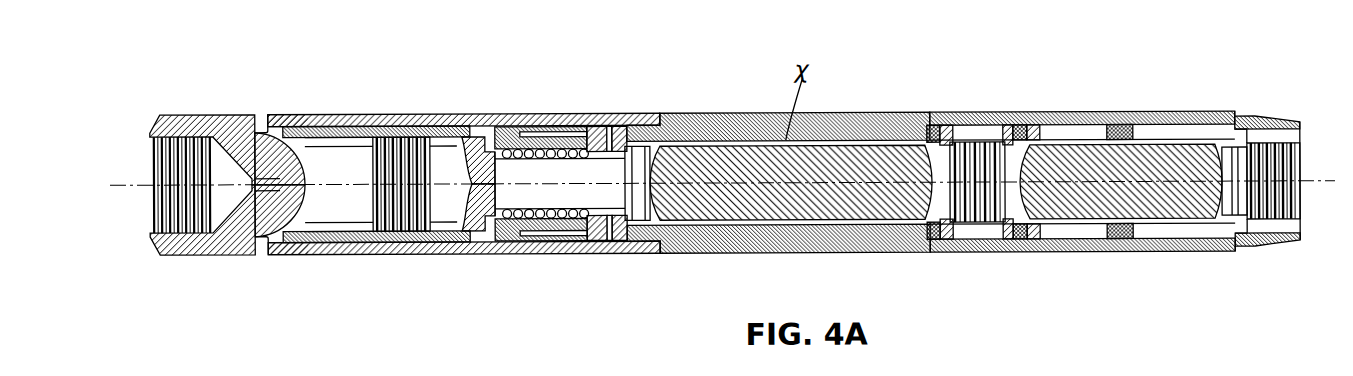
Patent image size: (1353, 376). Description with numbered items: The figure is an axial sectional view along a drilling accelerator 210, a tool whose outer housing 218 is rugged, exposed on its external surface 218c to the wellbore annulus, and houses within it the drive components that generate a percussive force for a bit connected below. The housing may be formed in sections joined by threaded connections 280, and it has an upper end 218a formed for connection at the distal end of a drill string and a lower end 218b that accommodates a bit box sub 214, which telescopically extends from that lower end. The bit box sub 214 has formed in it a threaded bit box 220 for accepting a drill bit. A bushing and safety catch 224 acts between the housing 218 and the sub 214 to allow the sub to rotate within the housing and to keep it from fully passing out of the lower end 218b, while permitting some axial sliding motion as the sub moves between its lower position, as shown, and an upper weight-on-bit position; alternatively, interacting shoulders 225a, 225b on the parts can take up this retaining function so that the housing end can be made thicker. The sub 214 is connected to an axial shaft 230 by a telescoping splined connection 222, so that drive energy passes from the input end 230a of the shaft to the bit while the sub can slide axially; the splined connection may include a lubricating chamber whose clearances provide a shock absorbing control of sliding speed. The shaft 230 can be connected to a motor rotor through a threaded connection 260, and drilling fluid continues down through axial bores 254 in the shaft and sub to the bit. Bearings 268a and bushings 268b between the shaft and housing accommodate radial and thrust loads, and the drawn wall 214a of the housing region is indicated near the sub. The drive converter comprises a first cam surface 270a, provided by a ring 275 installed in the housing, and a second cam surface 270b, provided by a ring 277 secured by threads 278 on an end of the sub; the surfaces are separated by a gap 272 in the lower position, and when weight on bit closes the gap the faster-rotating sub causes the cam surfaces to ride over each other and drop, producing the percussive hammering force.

The drilling accelerator 210 is at (475, 22).
The bit box sub 214 is at (313, 217).
The housing inner wall 214a is at (425, 128).
The outer housing 218 is at (712, 119).
The upper end 218a is at (1281, 86).
The lower end 218b is at (277, 113).
The external surface 218c is at (390, 113).
The threaded bit box 220 is at (184, 214).
The telescoping splined connection 222 is at (508, 239).
The bushing and safety catch 224 is at (413, 240).
The interacting shoulder 225a is at (530, 234).
The interacting shoulder 225b is at (525, 141).
The axial shaft 230 is at (1097, 206).
The input end 230a is at (474, 238).
The axial bore 254 is at (283, 203).
The threaded connection 260 is at (1296, 207).
The bearing 268a is at (953, 244).
The bushing 268b is at (727, 230).
The first cam surface 270a is at (612, 245).
The second cam surface 270b is at (590, 241).
The gap 272 is at (604, 128).
The ring 275 is at (642, 123).
The ring 277 is at (592, 125).
The threads 278 is at (540, 136).
The threaded connection 280 is at (617, 126).